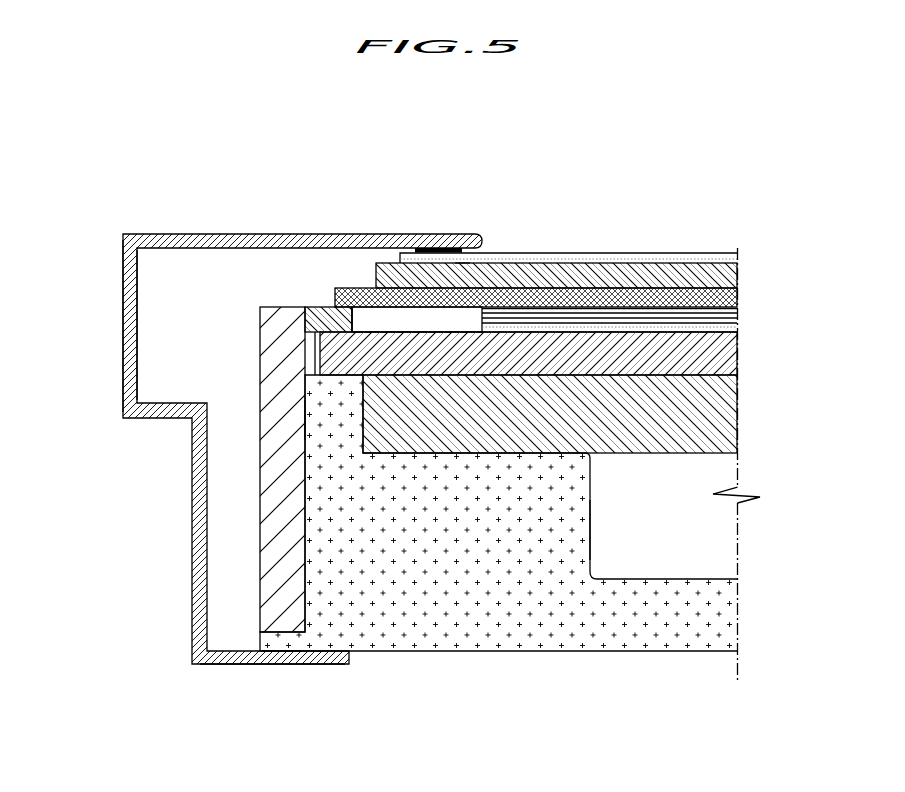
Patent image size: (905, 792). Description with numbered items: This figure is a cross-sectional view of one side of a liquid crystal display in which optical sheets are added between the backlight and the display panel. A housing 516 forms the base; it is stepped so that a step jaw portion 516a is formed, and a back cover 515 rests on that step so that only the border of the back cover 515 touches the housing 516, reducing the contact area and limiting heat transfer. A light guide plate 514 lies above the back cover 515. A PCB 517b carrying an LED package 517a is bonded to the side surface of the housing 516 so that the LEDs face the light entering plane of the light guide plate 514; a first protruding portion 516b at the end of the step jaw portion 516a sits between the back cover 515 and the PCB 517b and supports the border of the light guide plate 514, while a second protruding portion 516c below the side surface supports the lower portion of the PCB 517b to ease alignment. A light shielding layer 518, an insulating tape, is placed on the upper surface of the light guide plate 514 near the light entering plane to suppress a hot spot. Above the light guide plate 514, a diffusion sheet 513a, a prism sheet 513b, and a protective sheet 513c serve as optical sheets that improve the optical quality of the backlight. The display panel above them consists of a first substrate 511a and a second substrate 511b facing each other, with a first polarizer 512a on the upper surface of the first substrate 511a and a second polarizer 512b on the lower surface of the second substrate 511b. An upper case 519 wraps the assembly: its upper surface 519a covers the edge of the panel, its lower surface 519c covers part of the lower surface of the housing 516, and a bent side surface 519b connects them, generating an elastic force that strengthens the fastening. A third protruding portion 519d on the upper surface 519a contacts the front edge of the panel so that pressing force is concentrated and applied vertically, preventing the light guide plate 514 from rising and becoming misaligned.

The first substrate 511a is at (735, 282).
The second substrate 511b is at (733, 297).
The first polarizer 512a is at (733, 259).
The second polarizer 512b is at (733, 327).
The diffusion sheet 513a is at (592, 312).
The prism sheet 513b is at (608, 315).
The protective sheet 513c is at (637, 320).
The light guide plate 514 is at (735, 363).
The back cover 515 is at (732, 422).
The housing 516 is at (733, 628).
The step jaw portion 516a is at (580, 537).
The first protruding portion 516b is at (353, 420).
The second protruding portion 516c is at (282, 644).
The LED package 517a is at (307, 327).
The PCB 517b is at (275, 332).
The light shielding layer 518 is at (343, 327).
The upper case 519 is at (153, 408).
The upper surface 519a is at (478, 238).
The side surface 519b is at (130, 381).
The lower surface 519c is at (212, 665).
The third protruding portion 519d is at (462, 267).